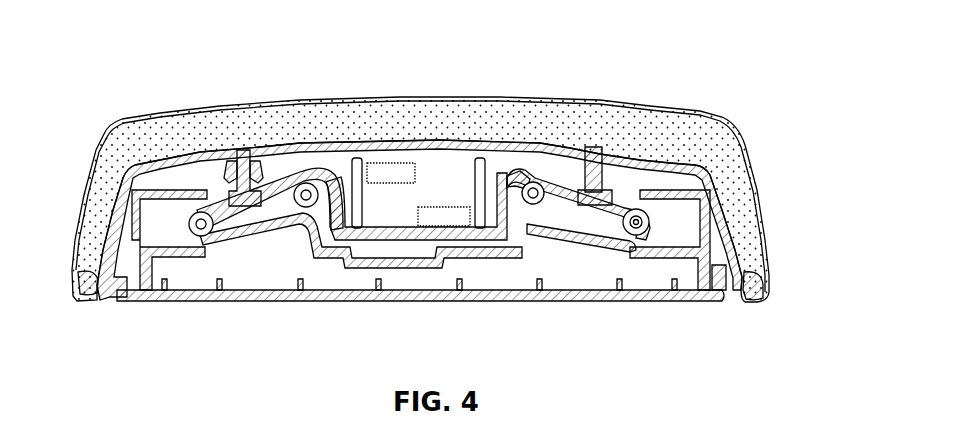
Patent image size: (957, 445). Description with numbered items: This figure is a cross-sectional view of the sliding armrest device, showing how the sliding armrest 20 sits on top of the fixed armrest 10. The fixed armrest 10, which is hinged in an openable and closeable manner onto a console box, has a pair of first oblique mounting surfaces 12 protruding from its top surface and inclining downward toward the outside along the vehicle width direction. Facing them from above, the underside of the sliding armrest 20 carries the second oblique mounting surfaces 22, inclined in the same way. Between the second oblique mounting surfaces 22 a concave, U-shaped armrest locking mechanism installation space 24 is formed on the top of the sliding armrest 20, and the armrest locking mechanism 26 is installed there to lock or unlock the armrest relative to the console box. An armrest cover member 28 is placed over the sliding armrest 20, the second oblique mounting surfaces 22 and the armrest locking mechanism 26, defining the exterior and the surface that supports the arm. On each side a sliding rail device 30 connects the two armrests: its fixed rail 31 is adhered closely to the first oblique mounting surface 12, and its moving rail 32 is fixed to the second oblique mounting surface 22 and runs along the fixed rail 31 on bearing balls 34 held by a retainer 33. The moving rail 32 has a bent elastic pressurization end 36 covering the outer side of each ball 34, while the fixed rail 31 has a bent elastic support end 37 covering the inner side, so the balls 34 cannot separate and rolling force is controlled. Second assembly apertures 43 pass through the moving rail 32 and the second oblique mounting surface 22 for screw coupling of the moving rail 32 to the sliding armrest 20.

The fixed armrest 10 is at (182, 280).
The first oblique mounting surface 12 is at (268, 237).
The sliding armrest 20 is at (277, 155).
The second oblique mounting surface 22 is at (207, 190).
The armrest locking mechanism installation space 24 is at (392, 227).
The armrest locking mechanism 26 is at (383, 168).
The armrest cover member 28 is at (393, 99).
The sliding rail device 30 is at (658, 195).
The fixed rail 31 is at (568, 225).
The moving rail 32 is at (620, 190).
The retainer 33 is at (512, 178).
The bearing ball 34 is at (655, 232).
The elastic pressurization end 36 is at (655, 220).
The elastic support end 37 is at (614, 222).
The second assembly aperture 43 is at (575, 192).